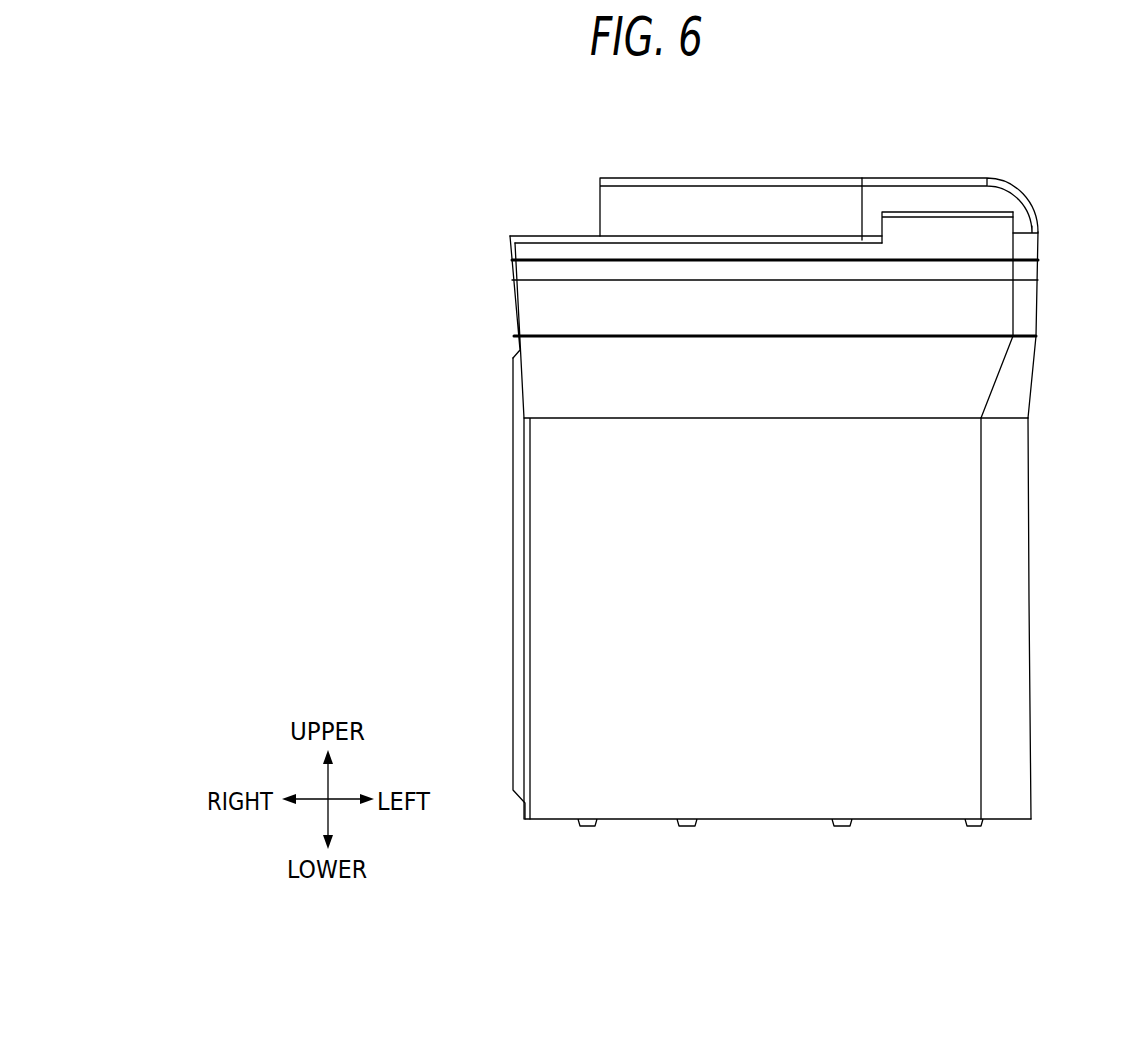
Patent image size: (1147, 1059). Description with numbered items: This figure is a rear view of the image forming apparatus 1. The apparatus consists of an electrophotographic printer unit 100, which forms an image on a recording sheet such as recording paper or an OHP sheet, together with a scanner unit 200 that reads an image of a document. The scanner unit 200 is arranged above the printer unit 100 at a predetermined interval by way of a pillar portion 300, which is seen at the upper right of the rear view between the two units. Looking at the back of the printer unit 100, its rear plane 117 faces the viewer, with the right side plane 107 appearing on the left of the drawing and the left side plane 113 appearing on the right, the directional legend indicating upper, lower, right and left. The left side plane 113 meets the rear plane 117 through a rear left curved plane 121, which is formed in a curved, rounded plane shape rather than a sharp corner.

The image forming apparatus 1 is at (792, 162).
The scanner unit 200 is at (982, 171).
The pillar portion 300 is at (1014, 381).
The rear left curved plane 121 is at (1012, 484).
The printer unit 100 is at (960, 572).
The left side plane 113 is at (1030, 662).
The right side plane 107 is at (512, 633).
The rear plane 117 is at (760, 780).